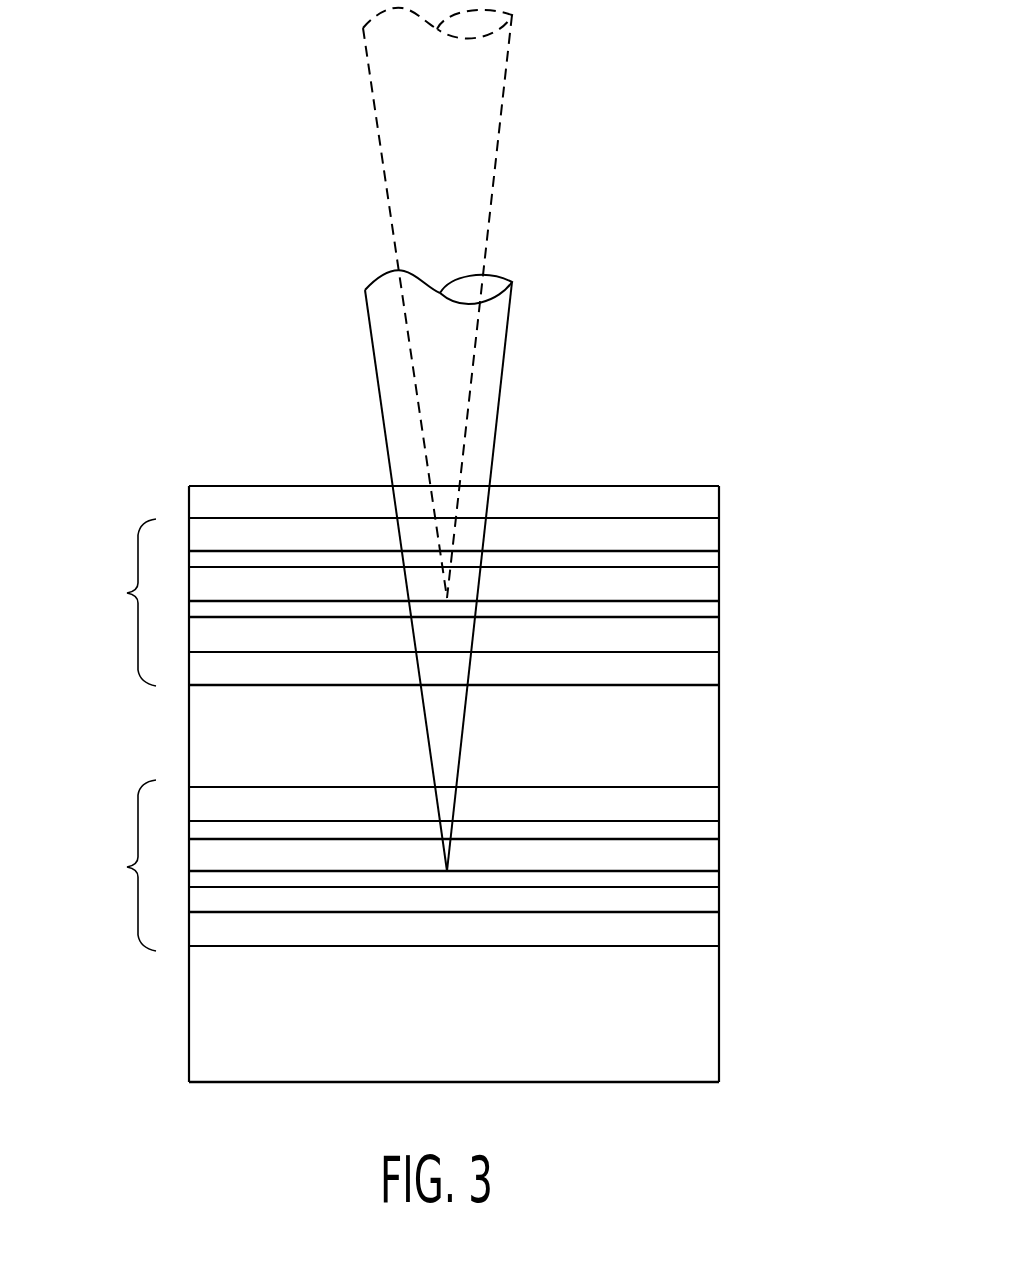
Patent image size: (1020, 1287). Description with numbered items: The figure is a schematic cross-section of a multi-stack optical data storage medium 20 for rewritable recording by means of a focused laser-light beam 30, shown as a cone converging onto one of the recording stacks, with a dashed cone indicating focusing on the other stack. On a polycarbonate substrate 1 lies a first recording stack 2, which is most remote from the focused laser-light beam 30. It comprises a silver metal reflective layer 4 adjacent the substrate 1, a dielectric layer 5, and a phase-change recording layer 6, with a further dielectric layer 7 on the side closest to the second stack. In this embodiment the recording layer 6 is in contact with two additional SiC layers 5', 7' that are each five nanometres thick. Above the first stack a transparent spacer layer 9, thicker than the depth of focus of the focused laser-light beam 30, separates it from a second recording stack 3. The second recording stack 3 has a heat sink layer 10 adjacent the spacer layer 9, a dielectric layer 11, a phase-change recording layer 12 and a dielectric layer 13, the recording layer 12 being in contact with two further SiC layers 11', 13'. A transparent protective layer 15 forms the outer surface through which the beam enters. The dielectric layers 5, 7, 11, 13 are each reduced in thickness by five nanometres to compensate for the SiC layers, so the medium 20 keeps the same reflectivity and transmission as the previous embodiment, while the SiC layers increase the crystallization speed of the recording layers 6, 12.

The substrate 1 is at (695, 1057).
The first recording stack 2 is at (110, 882).
The second recording stack 3 is at (110, 610).
The metal reflective layer 4 is at (695, 930).
The dielectric layer 5 is at (496, 908).
The additional SiC layer 5' is at (499, 883).
The recording layer 6 is at (695, 862).
The further dielectric layer 7 is at (496, 796).
The additional SiC layer 7' is at (499, 823).
The transparent spacer layer 9 is at (695, 748).
The heat sink layer 10 is at (695, 673).
The dielectric layer 11 is at (503, 635).
The additional SiC layer 11' is at (506, 607).
The recording layer 12 is at (695, 586).
The dielectric layer 13 is at (503, 522).
The additional SiC layer 13' is at (506, 551).
The protective layer 15 is at (695, 496).
The multi-stack optical data storage medium 20 is at (636, 410).
The focused laser-light beam 30 is at (470, 103).